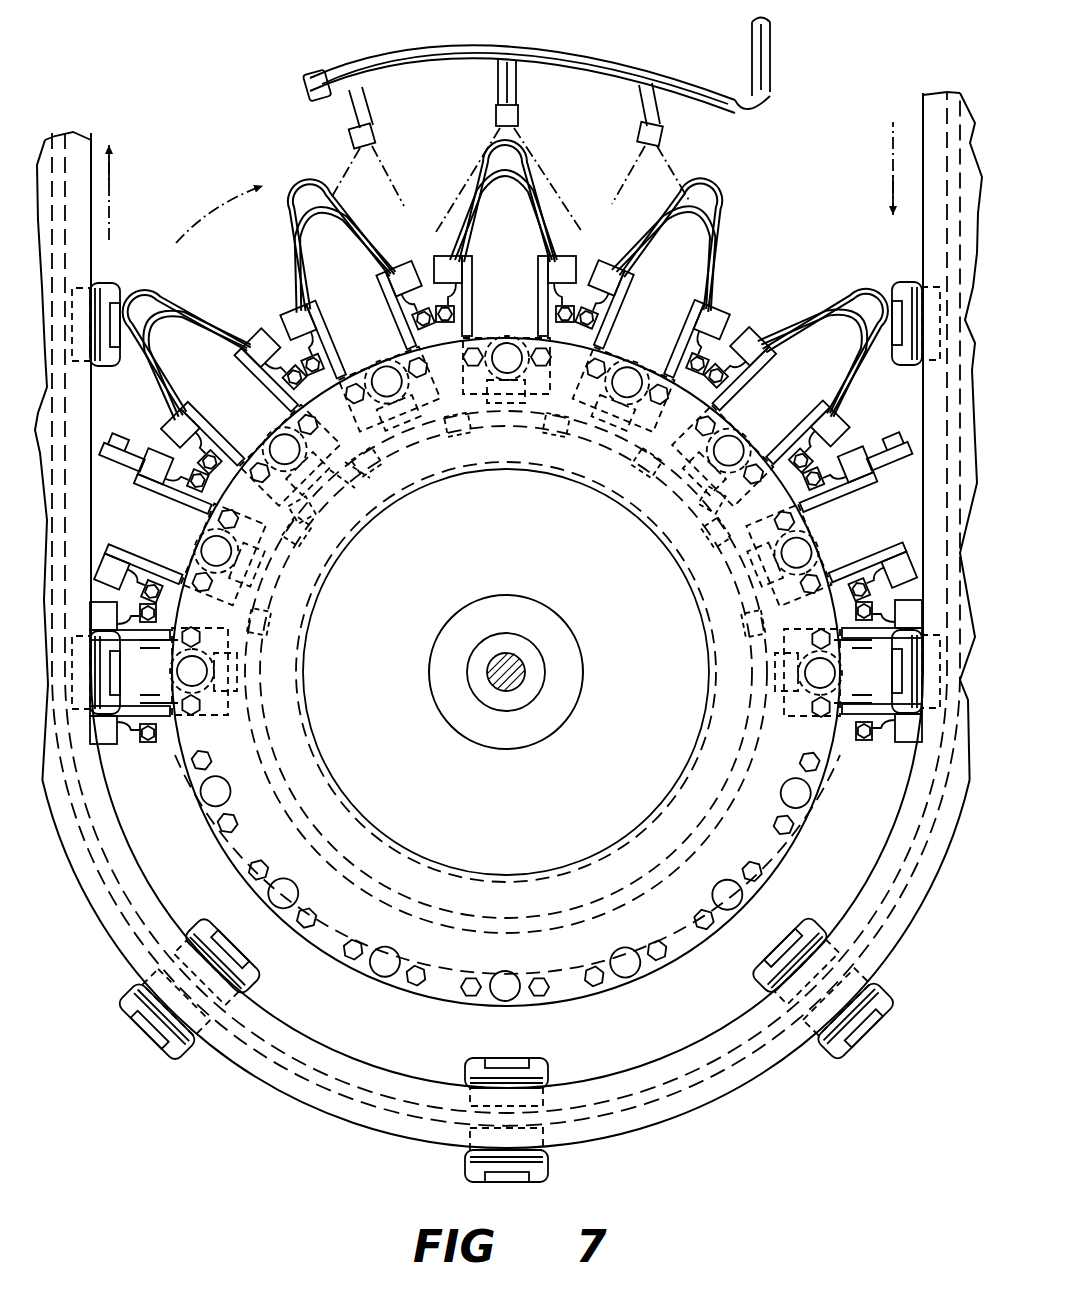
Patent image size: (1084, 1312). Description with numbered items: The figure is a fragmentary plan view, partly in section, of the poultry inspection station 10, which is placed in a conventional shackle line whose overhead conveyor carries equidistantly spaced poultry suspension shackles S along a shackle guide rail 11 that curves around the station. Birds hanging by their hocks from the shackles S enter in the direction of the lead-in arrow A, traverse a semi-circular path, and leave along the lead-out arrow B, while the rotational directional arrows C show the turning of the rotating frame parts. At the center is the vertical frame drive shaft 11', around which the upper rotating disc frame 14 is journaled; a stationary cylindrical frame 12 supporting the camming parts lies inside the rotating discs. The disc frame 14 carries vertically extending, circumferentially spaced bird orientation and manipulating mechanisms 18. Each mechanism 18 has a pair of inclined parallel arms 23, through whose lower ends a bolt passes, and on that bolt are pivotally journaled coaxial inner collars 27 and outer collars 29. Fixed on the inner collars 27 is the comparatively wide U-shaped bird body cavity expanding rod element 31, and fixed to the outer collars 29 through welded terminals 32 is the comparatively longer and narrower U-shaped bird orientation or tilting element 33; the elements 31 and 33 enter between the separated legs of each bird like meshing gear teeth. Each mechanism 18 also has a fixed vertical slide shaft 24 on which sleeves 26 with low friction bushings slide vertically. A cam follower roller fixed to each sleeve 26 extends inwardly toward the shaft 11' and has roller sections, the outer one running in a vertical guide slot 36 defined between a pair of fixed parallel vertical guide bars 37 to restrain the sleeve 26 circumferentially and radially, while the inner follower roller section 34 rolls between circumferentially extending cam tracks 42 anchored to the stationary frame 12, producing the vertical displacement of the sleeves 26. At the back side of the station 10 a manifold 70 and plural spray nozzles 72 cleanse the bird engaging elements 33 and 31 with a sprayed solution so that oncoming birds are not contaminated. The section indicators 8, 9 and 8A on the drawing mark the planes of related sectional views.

The poultry inspection station 10 is at (786, 157).
The shackle guide rail 11 is at (508, 620).
The frame drive shaft 11' is at (506, 672).
The stationary cylindrical frame 12 is at (598, 853).
The upper rotating disc frame 14 is at (530, 836).
The bird orientation and manipulating mechanism 18 is at (418, 252).
The inclined parallel arm 23 is at (392, 332).
The vertical slide shaft 24 is at (503, 344).
The sleeve 26 is at (392, 362).
The inner collar 27 is at (240, 396).
The outer collar 29 is at (164, 446).
The bird body cavity expanding rod element 31 is at (342, 222).
The welded terminal 32 is at (530, 412).
The bird orientation or tilting element 33 is at (306, 186).
The inner follower roller section 34 is at (497, 420).
The vertical guide slot 36 is at (352, 468).
The vertical guide bar 37 is at (302, 522).
The cam track 42 is at (550, 920).
The manifold 70 is at (634, 63).
The spray nozzle 72 is at (372, 132).
The poultry suspension shackle S is at (164, 1036).
The lead-in arrow A is at (892, 136).
The lead-out arrow B is at (112, 186).
The rotational directional arrow C is at (221, 210).
The section line 8 is at (507, 662).
The section line 9 is at (305, 668).
The section line 8A is at (505, 672).